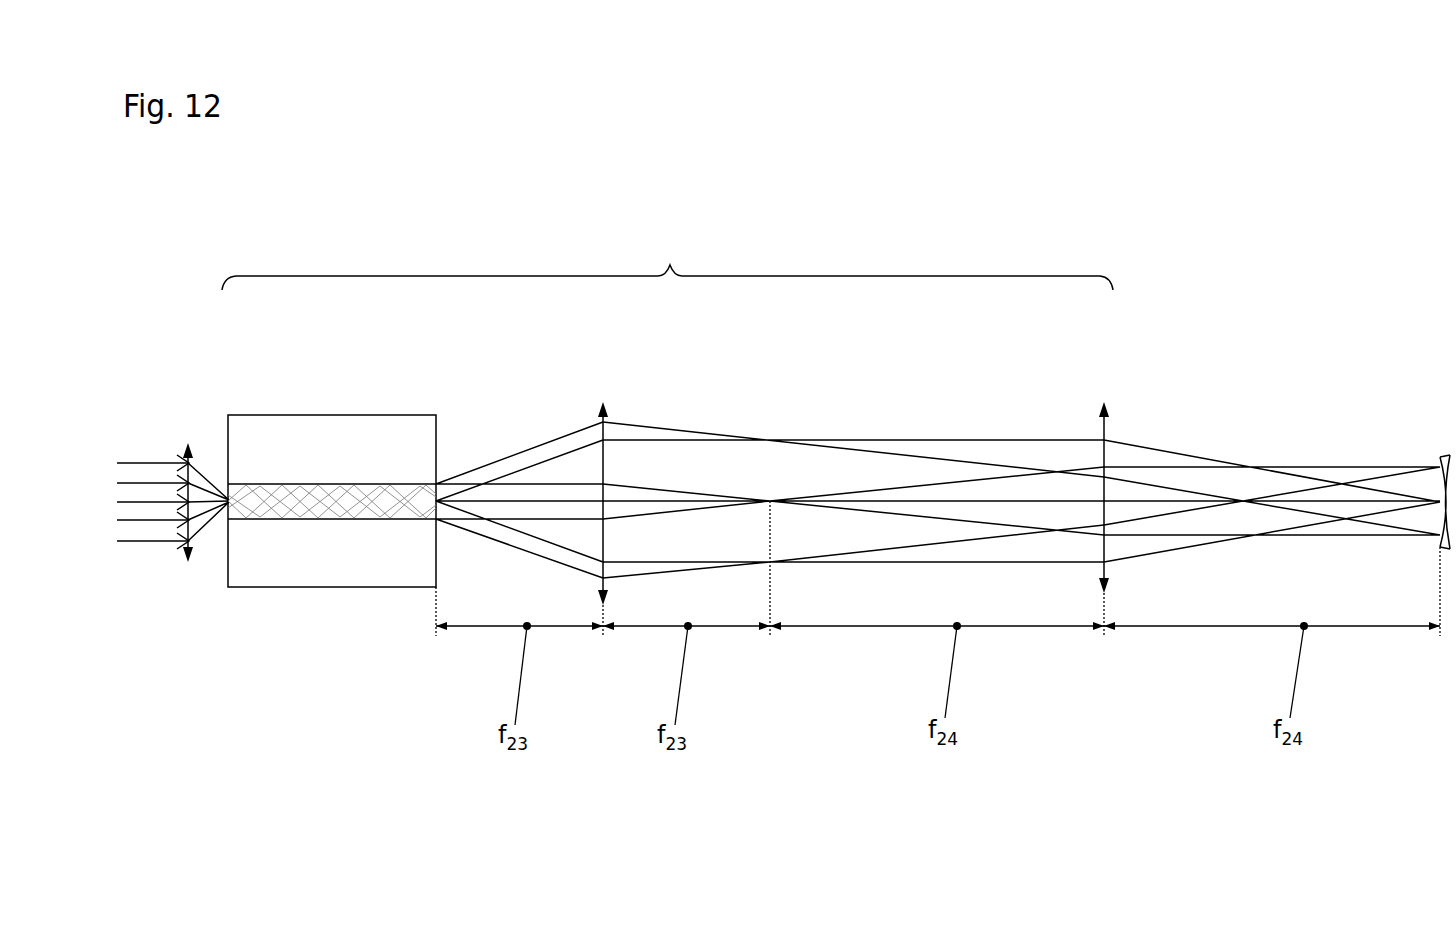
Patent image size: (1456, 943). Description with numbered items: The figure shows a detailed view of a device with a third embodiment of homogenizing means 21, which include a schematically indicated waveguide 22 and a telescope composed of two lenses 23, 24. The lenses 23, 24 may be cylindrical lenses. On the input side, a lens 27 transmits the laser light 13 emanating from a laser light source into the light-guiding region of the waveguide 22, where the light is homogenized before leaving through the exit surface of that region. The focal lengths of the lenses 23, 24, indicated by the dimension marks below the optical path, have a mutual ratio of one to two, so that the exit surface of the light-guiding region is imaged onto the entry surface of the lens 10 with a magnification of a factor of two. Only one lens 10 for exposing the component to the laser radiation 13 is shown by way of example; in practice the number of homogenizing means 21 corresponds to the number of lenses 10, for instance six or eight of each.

The lens 10 is at (1446, 487).
The laser light 13 is at (145, 481).
The homogenizing means 21 is at (667, 260).
The waveguide 22 is at (329, 558).
The lens 23 is at (603, 421).
The lens 24 is at (1104, 430).
The lens 27 is at (188, 562).